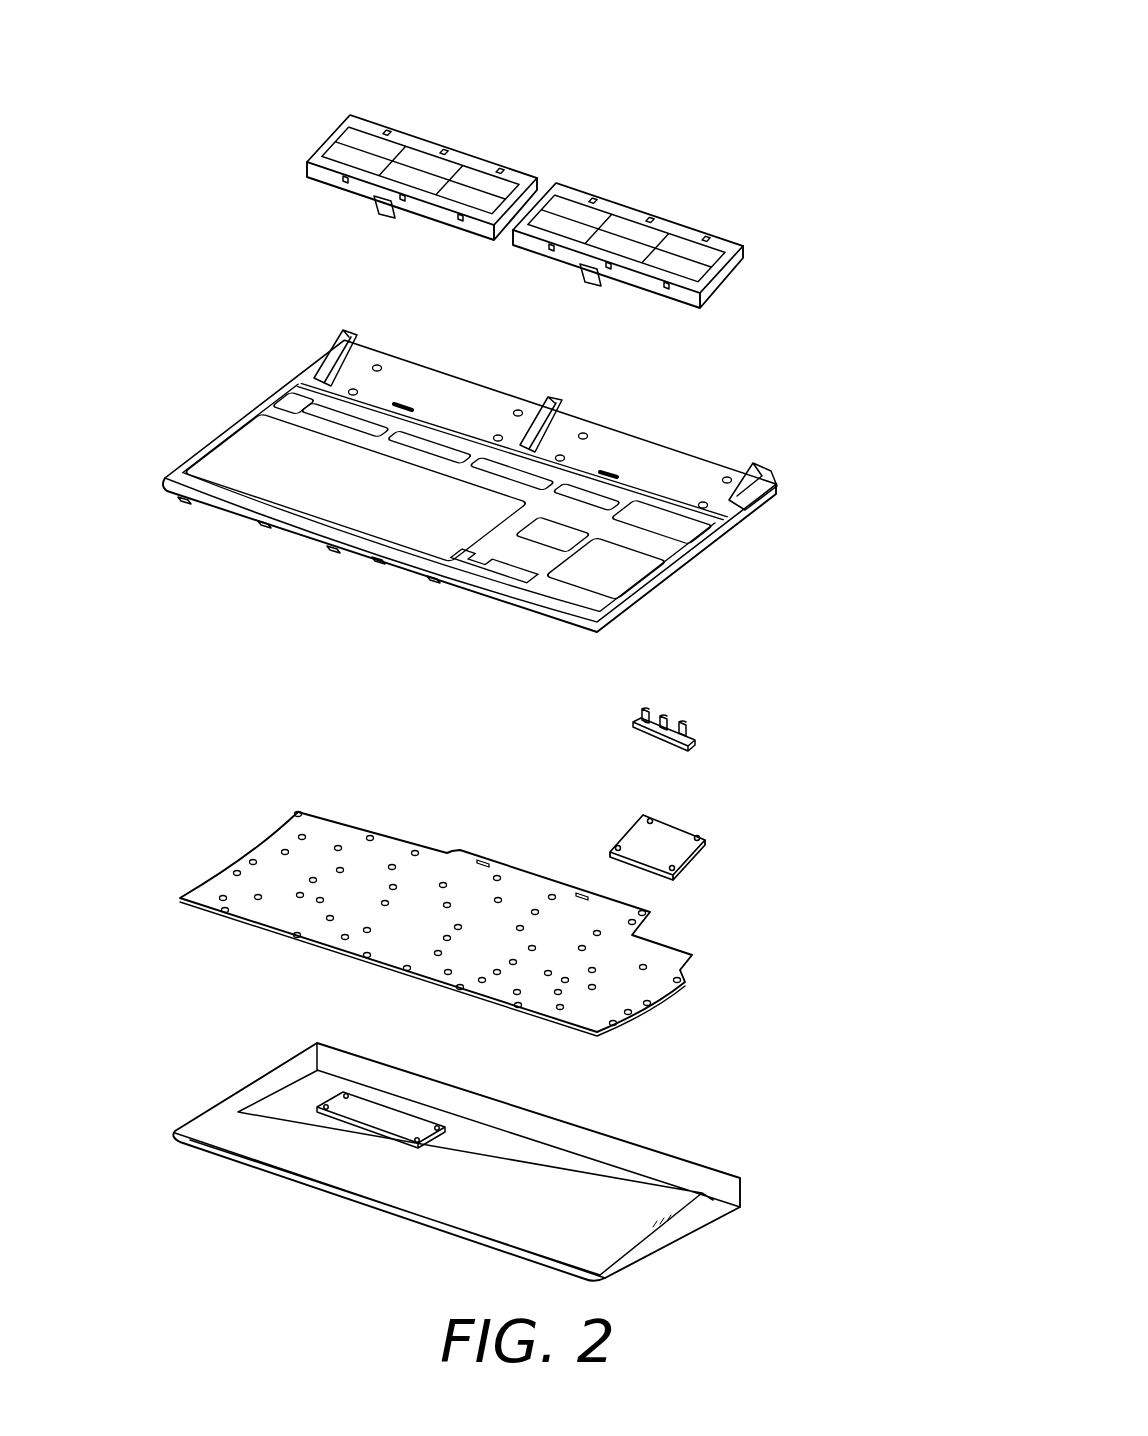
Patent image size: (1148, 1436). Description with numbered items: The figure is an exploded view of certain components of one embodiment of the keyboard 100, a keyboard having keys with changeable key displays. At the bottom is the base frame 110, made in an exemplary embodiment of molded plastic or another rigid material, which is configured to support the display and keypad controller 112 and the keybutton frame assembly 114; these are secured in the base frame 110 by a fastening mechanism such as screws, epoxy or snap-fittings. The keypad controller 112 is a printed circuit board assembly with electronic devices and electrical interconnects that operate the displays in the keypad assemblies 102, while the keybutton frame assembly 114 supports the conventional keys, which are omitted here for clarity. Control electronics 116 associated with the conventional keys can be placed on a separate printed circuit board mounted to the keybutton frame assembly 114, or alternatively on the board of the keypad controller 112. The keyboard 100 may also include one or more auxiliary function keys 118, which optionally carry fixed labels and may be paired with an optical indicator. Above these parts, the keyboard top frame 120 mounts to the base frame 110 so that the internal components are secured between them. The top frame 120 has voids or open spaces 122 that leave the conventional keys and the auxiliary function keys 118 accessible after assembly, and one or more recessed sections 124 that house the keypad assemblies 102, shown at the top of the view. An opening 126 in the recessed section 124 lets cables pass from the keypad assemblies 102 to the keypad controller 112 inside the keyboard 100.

The keyboard 100 is at (649, 55).
The keypad assemblies 102 is at (752, 226).
The base frame 110 is at (504, 1162).
The display and keypad controller 112 is at (387, 1110).
The keybutton frame assembly 114 is at (691, 981).
The control electronics 116 is at (678, 836).
The auxiliary function keys 118 is at (692, 720).
The keyboard top frame 120 is at (485, 450).
The voids or open spaces 122 is at (248, 468).
The recessed sections 124 is at (402, 377).
The opening 126 is at (610, 470).